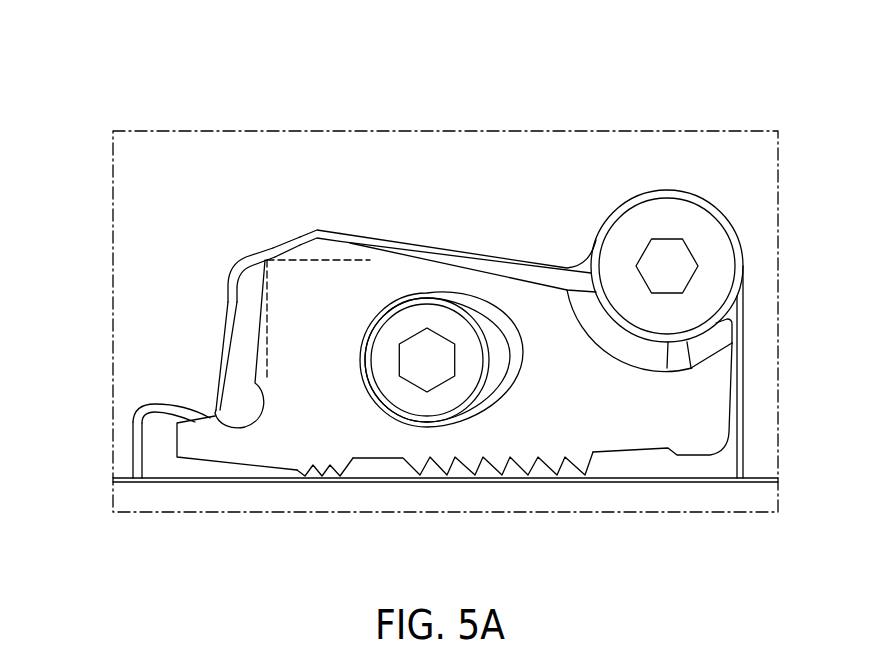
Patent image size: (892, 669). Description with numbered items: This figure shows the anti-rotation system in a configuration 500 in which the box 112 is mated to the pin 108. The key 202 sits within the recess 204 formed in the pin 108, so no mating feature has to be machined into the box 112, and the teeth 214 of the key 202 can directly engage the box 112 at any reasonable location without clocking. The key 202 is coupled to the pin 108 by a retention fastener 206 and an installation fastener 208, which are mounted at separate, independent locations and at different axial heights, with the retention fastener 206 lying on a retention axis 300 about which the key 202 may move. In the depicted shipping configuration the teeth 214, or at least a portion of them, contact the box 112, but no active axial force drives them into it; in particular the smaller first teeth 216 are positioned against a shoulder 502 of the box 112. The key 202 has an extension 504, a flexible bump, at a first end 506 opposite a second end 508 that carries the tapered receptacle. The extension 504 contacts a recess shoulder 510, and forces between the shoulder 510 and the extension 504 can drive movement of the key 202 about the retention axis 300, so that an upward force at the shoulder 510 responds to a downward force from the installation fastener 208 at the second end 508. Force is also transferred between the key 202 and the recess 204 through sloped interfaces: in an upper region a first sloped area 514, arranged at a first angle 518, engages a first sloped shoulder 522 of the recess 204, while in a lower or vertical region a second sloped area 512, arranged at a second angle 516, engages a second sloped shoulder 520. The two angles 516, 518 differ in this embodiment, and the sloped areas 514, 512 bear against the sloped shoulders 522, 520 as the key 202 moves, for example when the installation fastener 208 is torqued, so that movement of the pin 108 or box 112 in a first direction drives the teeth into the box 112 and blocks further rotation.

The configuration 500 is at (597, 107).
The pin end 108 is at (762, 195).
The box end 112 is at (767, 500).
The key 202 is at (353, 273).
The recess 204 is at (445, 223).
The retention fastener 206 is at (410, 397).
The installation fastener 208 is at (675, 222).
The teeth 214 is at (316, 499).
The first teeth 216 is at (355, 498).
The retention axis 300 is at (427, 359).
The shoulder 502 is at (123, 475).
The extension 504 is at (207, 437).
The first end 506 is at (167, 499).
The second end 508 is at (680, 493).
The recess shoulder 510 is at (210, 418).
The second sloped area 512 is at (230, 327).
The first sloped area 514 is at (280, 247).
The second angle 516 is at (228, 362).
The first angle 518 is at (318, 210).
The second sloped shoulder 520 is at (228, 302).
The first sloped shoulder 522 is at (307, 237).